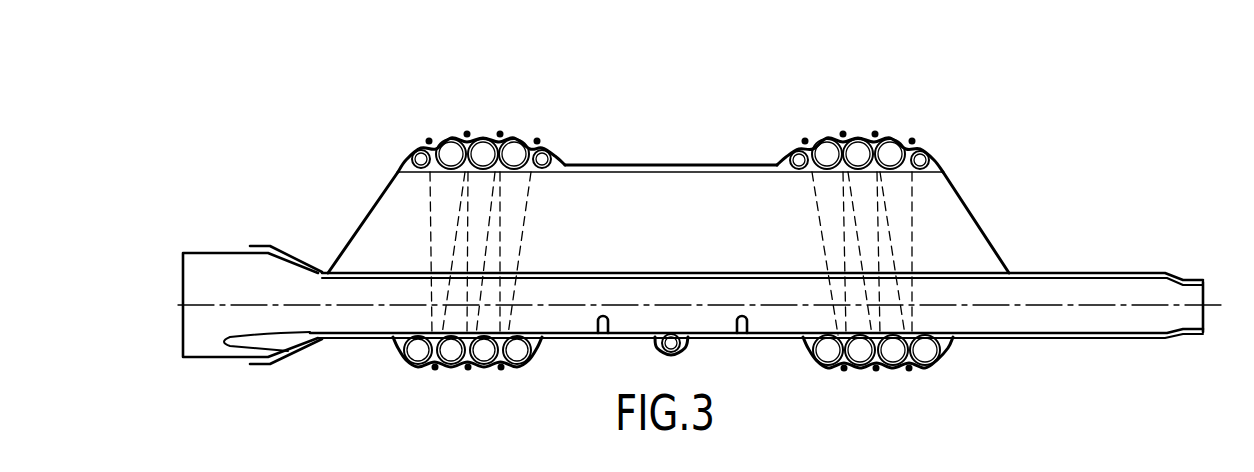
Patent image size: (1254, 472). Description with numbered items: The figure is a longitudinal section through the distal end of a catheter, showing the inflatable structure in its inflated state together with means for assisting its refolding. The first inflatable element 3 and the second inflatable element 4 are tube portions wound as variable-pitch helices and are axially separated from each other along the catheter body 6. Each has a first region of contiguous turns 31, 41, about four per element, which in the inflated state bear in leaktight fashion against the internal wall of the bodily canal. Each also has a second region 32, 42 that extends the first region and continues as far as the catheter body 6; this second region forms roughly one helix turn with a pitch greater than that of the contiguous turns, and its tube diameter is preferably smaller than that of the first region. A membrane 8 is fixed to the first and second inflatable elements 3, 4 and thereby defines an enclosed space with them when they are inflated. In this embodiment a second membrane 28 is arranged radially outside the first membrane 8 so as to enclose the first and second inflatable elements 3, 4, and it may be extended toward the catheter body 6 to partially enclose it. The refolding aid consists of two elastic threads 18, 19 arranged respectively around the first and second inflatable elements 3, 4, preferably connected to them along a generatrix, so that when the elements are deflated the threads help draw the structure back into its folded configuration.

The first inflatable element 3 is at (514, 101).
The second inflatable element 4 is at (898, 102).
The catheter body 6 is at (223, 265).
The membrane 8 is at (662, 172).
The elastic thread 18 is at (430, 227).
The elastic thread 19 is at (913, 227).
The second membrane 28 is at (698, 165).
The contiguous turns 31 is at (484, 150).
The second region 32 is at (418, 151).
The contiguous turns 41 is at (855, 150).
The second region 42 is at (930, 163).